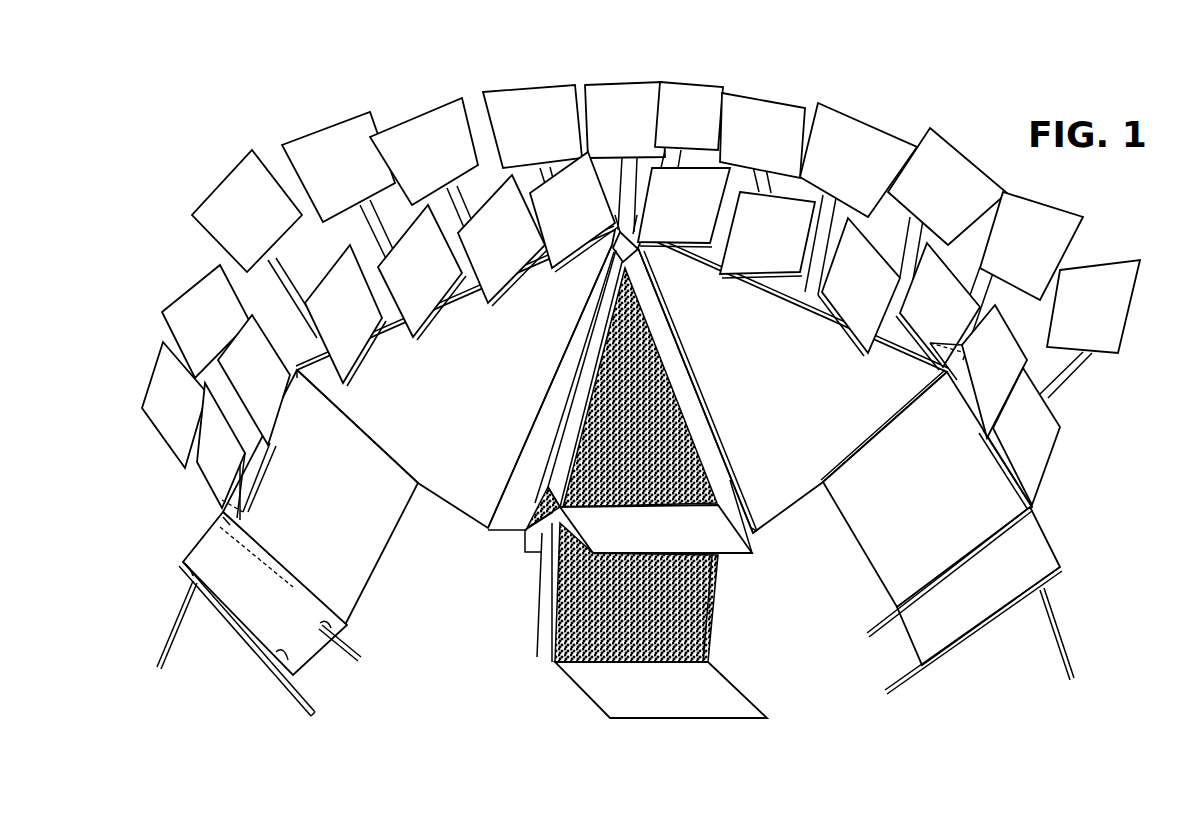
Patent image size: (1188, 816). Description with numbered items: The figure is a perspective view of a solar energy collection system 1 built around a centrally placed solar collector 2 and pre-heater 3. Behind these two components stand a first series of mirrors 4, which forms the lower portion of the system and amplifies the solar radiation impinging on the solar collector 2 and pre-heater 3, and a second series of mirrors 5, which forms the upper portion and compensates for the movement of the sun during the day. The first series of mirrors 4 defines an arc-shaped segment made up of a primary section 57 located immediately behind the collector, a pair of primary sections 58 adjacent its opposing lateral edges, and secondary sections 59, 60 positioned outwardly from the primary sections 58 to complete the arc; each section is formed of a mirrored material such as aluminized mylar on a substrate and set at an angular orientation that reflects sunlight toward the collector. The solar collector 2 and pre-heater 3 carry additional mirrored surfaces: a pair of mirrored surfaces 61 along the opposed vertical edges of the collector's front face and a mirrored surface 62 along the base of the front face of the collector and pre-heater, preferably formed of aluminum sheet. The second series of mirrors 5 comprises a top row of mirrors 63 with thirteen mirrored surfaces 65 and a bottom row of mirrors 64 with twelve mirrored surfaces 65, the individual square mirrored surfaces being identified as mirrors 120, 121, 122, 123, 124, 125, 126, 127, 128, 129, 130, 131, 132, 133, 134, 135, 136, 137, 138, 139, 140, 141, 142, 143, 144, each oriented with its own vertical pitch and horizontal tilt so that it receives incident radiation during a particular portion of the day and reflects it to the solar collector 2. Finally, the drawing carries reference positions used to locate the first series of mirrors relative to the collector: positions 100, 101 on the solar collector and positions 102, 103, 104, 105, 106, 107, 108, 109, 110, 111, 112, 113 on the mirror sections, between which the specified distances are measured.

The solar energy collection system 1 is at (320, 69).
The solar collector 2 is at (690, 384).
The pre-heater 3 is at (722, 634).
The first series of mirrors 4 is at (402, 560).
The second series of mirrors 5 is at (1134, 386).
The primary section 57 is at (550, 418).
The primary section 58 is at (404, 400).
The secondary section 59 is at (304, 509).
The secondary section 60 is at (251, 617).
The mirrored surface 61 is at (588, 360).
The mirrored surface 62 is at (631, 540).
The top row of mirrors 63 is at (147, 436).
The bottom row of mirrors 64 is at (190, 485).
The mirrored surface 65 is at (945, 165).
The position on solar collector 100 is at (533, 553).
The position on solar collector 101 is at (712, 520).
The position on section 102 is at (297, 374).
The position on section 103 is at (222, 525).
The position on section 104 is at (190, 577).
The position on section 105 is at (223, 508).
The position on section 106 is at (282, 653).
The position on section 107 is at (323, 627).
The position on section 108 is at (957, 380).
The position on section 109 is at (1033, 502).
The position on section 110 is at (1030, 513).
The position on section 111 is at (1063, 567).
The position on section 112 is at (906, 603).
The position on section 113 is at (922, 667).
The mirrored surface 120 is at (1003, 437).
The mirrored surface 121 is at (968, 381).
The mirrored surface 122 is at (913, 319).
The mirrored surface 123 is at (834, 292).
The mirrored surface 124 is at (736, 248).
The mirrored surface 125 is at (653, 220).
The mirrored surface 126 is at (196, 462).
The mirrored surface 127 is at (234, 386).
The mirrored surface 128 is at (319, 326).
The mirrored surface 129 is at (394, 284).
The mirrored surface 130 is at (474, 254).
The mirrored surface 131 is at (544, 222).
The mirrored surface 132 is at (1064, 321).
The mirrored surface 133 is at (996, 255).
The mirrored surface 134 is at (911, 200).
The mirrored surface 135 is at (819, 170).
The mirrored surface 136 is at (734, 144).
The mirrored surface 137 is at (661, 123).
The mirrored surface 138 is at (151, 410).
The mirrored surface 139 is at (178, 335).
The mirrored surface 140 is at (211, 228).
The mirrored surface 141 is at (312, 184).
The mirrored surface 142 is at (403, 165).
The mirrored surface 143 is at (511, 144).
The mirrored surface 144 is at (593, 137).